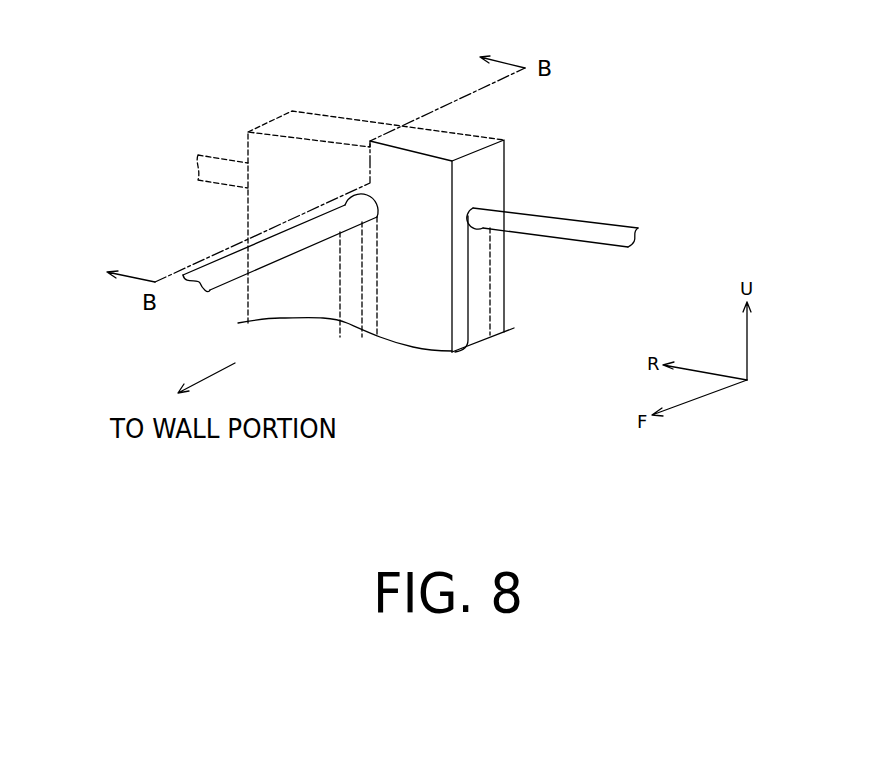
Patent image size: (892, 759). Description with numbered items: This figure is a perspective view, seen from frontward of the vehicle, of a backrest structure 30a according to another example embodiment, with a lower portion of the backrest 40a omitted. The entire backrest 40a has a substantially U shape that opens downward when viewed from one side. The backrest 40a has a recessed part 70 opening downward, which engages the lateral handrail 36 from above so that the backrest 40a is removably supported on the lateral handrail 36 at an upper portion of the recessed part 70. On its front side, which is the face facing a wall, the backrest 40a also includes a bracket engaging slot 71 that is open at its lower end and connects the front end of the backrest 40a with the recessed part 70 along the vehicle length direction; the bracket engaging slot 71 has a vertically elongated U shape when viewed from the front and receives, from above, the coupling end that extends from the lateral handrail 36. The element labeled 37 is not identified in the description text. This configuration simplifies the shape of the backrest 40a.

The backrest structure 30a is at (331, 114).
The backrest 40a is at (505, 177).
The lateral handrail 36 is at (607, 233).
The rod (shaft) 37 is at (280, 262).
The recessed part 70 is at (483, 227).
The bracket engaging slot 71 is at (348, 290).